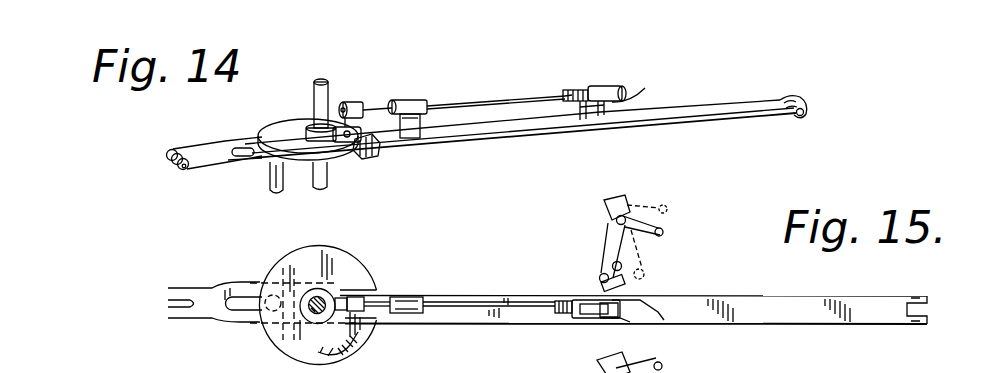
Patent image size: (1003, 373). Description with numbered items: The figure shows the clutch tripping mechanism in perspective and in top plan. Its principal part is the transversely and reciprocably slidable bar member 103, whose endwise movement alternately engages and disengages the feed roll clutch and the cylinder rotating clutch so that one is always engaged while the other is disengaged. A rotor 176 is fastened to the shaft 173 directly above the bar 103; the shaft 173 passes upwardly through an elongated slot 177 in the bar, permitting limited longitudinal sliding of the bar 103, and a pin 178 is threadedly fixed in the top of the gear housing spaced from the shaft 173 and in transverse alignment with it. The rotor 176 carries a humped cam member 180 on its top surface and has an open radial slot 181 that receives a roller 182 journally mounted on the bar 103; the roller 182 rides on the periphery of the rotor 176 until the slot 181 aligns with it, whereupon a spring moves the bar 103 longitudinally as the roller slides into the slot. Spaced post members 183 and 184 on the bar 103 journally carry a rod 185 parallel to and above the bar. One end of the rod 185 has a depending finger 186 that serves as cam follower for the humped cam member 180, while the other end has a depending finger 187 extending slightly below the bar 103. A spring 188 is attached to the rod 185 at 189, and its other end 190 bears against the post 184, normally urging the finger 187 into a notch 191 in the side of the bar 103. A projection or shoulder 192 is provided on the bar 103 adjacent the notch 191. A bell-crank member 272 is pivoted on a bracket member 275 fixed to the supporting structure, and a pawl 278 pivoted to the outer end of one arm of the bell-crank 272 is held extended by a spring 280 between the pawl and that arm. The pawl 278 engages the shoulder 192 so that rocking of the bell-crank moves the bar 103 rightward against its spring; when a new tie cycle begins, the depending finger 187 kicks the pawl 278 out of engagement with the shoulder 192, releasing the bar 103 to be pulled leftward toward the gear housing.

In FIG. 14, the sliding bar member 103 is at (745, 102).
In FIG. 15, the sliding bar member 103 is at (895, 296).
In FIG. 14, the shaft 173 is at (318, 100).
In FIG. 14, the rotor 176 is at (266, 127).
In FIG. 15, the rotor 176 is at (348, 229).
In FIG. 14, the elongated slot 177 is at (243, 160).
In FIG. 15, the elongated slot 177 is at (243, 312).
In FIG. 14, the pin 178 is at (272, 181).
In FIG. 14, the humped cam member 180 is at (363, 153).
In FIG. 15, the humped cam member 180 is at (346, 350).
In FIG. 14, the open radial slot 181 is at (336, 132).
In FIG. 15, the open radial slot 181 is at (362, 298).
In FIG. 14, the roller 182 is at (349, 142).
In FIG. 14, the post member 183 is at (410, 126).
In FIG. 15, the post member 183 is at (410, 301).
In FIG. 14, the post member 184 is at (583, 112).
In FIG. 15, the post member 184 is at (600, 320).
In FIG. 14, the rod 185 is at (452, 100).
In FIG. 15, the rod 185 is at (480, 302).
In FIG. 14, the depending finger 186 is at (338, 102).
In FIG. 15, the depending finger 186 is at (338, 290).
In FIG. 14, the depending finger 187 is at (618, 101).
In FIG. 14, the spring 188 is at (572, 89).
In FIG. 15, the spring 188 is at (563, 313).
In FIG. 14, the spring attachment point 189 is at (562, 92).
In FIG. 14, the spring end 190 is at (566, 103).
In FIG. 15, the notch 191 is at (622, 300).
In FIG. 15, the shoulder 192 is at (628, 293).
In FIG. 15, the bell-crank member 272 is at (606, 246).
In FIG. 15, the bracket member 275 is at (603, 207).
In FIG. 15, the pawl 278 is at (600, 288).
In FIG. 15, the spring 280 is at (623, 267).